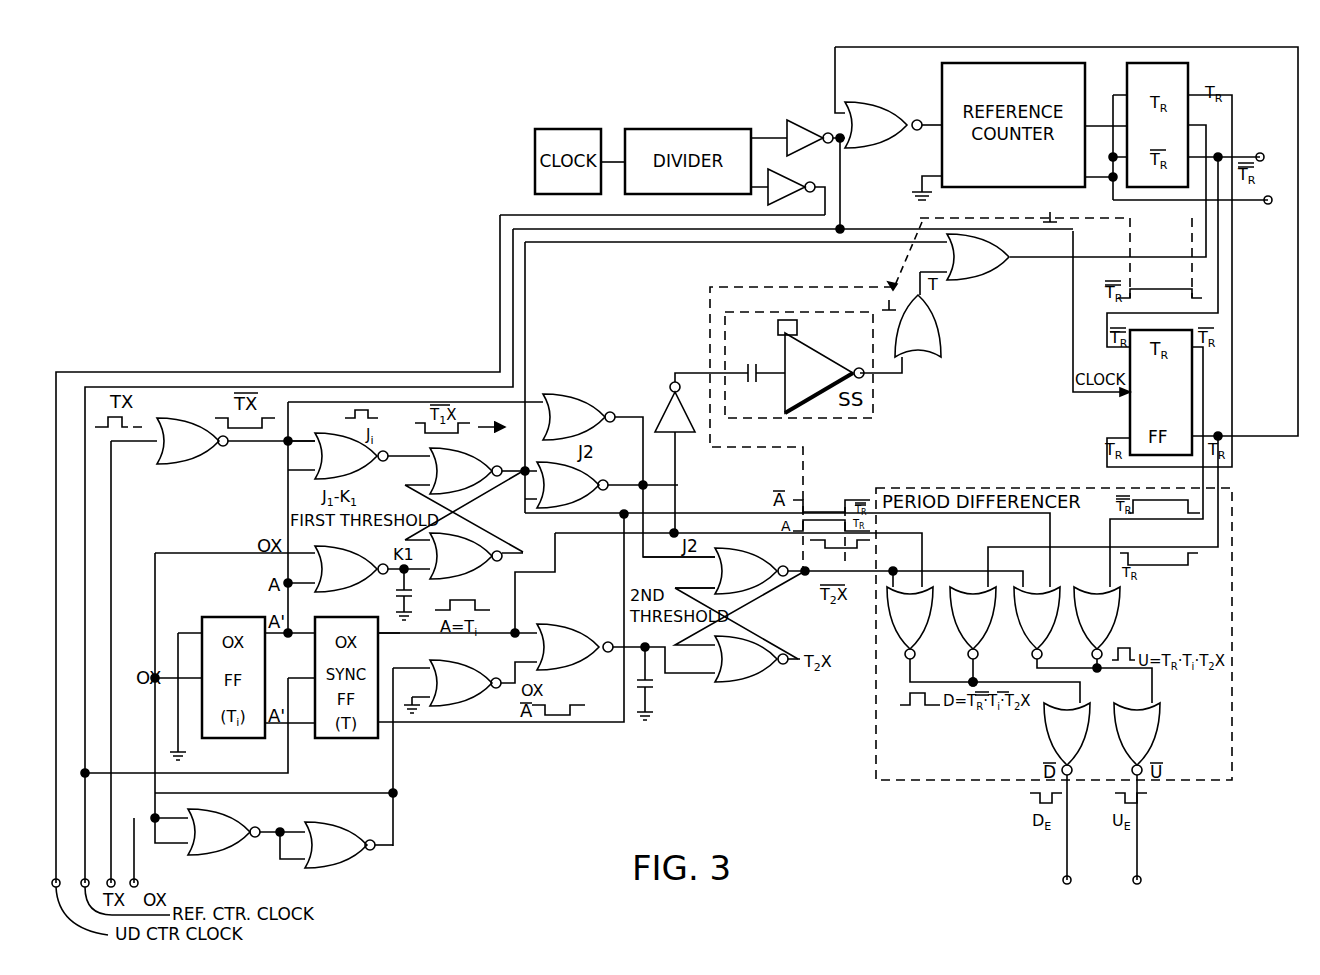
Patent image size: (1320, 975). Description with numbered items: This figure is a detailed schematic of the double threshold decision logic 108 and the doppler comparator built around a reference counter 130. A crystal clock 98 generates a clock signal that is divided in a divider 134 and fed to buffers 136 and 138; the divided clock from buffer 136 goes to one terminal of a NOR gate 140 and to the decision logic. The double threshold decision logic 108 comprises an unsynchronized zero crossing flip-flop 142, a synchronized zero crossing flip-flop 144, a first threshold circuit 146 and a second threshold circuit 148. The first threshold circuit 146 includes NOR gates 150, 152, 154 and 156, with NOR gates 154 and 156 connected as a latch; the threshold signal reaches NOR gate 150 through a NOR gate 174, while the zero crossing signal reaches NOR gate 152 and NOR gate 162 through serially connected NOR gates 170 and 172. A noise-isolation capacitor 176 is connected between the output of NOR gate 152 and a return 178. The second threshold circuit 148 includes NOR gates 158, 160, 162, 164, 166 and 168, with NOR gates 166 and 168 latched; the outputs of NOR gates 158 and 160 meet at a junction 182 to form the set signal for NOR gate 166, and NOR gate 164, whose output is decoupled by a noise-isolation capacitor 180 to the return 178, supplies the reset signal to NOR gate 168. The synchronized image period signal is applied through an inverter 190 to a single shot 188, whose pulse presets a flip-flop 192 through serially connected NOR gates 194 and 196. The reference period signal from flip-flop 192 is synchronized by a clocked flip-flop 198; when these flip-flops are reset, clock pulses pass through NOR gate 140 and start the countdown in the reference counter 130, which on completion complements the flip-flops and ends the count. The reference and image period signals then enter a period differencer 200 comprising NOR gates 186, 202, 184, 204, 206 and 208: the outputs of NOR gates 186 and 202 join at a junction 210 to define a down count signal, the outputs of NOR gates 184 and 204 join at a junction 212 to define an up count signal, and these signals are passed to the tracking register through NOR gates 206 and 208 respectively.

The crystal clock 98 is at (586, 128).
The divider 134 is at (690, 128).
The buffer 136 is at (816, 123).
The buffer 138 is at (800, 180).
The NOR gate 140 is at (902, 102).
The reference counter 130 is at (1005, 189).
The flip-flop 192 is at (1182, 80).
The NOR gate 196 is at (976, 281).
The NOR gate 194 is at (936, 340).
The single shot 188 is at (873, 418).
The flip-flop 198 is at (1130, 404).
The inverter 190 is at (662, 406).
The junction 182 is at (664, 482).
The NOR gate 158 is at (590, 394).
The NOR gate 160 is at (612, 471).
The NOR gate 154 is at (476, 450).
The NOR gate 150 is at (384, 478).
The NOR gate 174 is at (213, 461).
The first threshold circuit 146 is at (272, 520).
The NOR gate 152 is at (340, 546).
The noise-isolation capacitor 176 is at (394, 594).
The return 178 is at (674, 714).
The NOR gate 156 is at (474, 580).
The NOR gate 164 is at (582, 624).
The NOR gate 162 is at (478, 665).
The NOR gate 166 is at (738, 552).
The NOR gate 168 is at (737, 682).
The noise-isolation capacitor 180 is at (660, 684).
The second threshold circuit 148 is at (762, 700).
The unsynchronized zero crossing flip-flop 142 is at (236, 740).
The synchronized zero crossing flip-flop 144 is at (348, 740).
The double threshold decision logic 108 is at (478, 746).
The NOR gate 170 is at (228, 814).
The NOR gate 172 is at (328, 820).
The period differencer 200 is at (876, 780).
The NOR gate 186 is at (914, 655).
The NOR gate 202 is at (978, 655).
The NOR gate 184 is at (1041, 655).
The NOR gate 204 is at (1118, 616).
The junction 212 is at (1099, 672).
The junction 210 is at (970, 686).
The NOR gate 206 is at (1043, 736).
The NOR gate 208 is at (1158, 728).